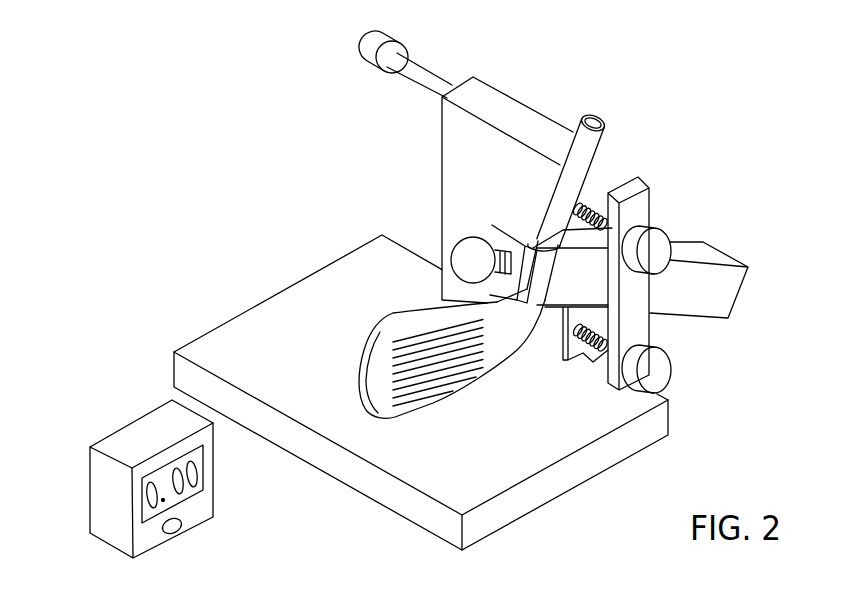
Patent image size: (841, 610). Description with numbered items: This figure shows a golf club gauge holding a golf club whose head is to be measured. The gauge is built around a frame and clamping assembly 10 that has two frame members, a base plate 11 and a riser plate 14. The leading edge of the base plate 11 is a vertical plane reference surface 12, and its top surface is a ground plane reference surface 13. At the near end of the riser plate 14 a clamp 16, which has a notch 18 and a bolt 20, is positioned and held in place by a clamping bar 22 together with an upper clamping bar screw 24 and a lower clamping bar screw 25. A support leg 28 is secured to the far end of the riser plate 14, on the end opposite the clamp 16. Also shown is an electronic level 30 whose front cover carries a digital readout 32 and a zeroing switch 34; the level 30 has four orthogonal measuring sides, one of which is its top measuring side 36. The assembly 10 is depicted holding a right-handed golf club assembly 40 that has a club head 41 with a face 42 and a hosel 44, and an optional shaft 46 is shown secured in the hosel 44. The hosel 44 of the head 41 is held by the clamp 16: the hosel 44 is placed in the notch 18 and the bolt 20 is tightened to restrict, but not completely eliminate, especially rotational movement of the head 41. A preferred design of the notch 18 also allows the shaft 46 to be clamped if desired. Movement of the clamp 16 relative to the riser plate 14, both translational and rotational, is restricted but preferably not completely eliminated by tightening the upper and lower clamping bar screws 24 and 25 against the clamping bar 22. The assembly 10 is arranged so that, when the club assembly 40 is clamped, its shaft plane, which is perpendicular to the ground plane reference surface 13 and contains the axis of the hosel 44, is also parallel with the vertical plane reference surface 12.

The frame and clamping assembly 10 is at (188, 312).
The base plate 11 is at (383, 490).
The vertical plane reference surface 12 is at (633, 459).
The ground plane reference surface 13 is at (543, 459).
The riser plate 14 is at (450, 142).
The clamp 16 is at (667, 295).
The notch 18 is at (547, 295).
The bolt 20 is at (462, 250).
The clamping bar 22 is at (638, 198).
The upper clamping bar screw 24 is at (647, 243).
The lower clamping bar screw 25 is at (655, 373).
The support leg 28 is at (407, 78).
The electronic level 30 is at (108, 445).
The digital readout 32 is at (145, 493).
The zeroing switch 34 is at (177, 520).
The top measuring side 36 is at (167, 443).
The golf club assembly 40 is at (608, 106).
The club head 41 is at (442, 392).
The face 42 is at (393, 395).
The hosel 44 is at (548, 258).
The shaft 46 is at (565, 193).